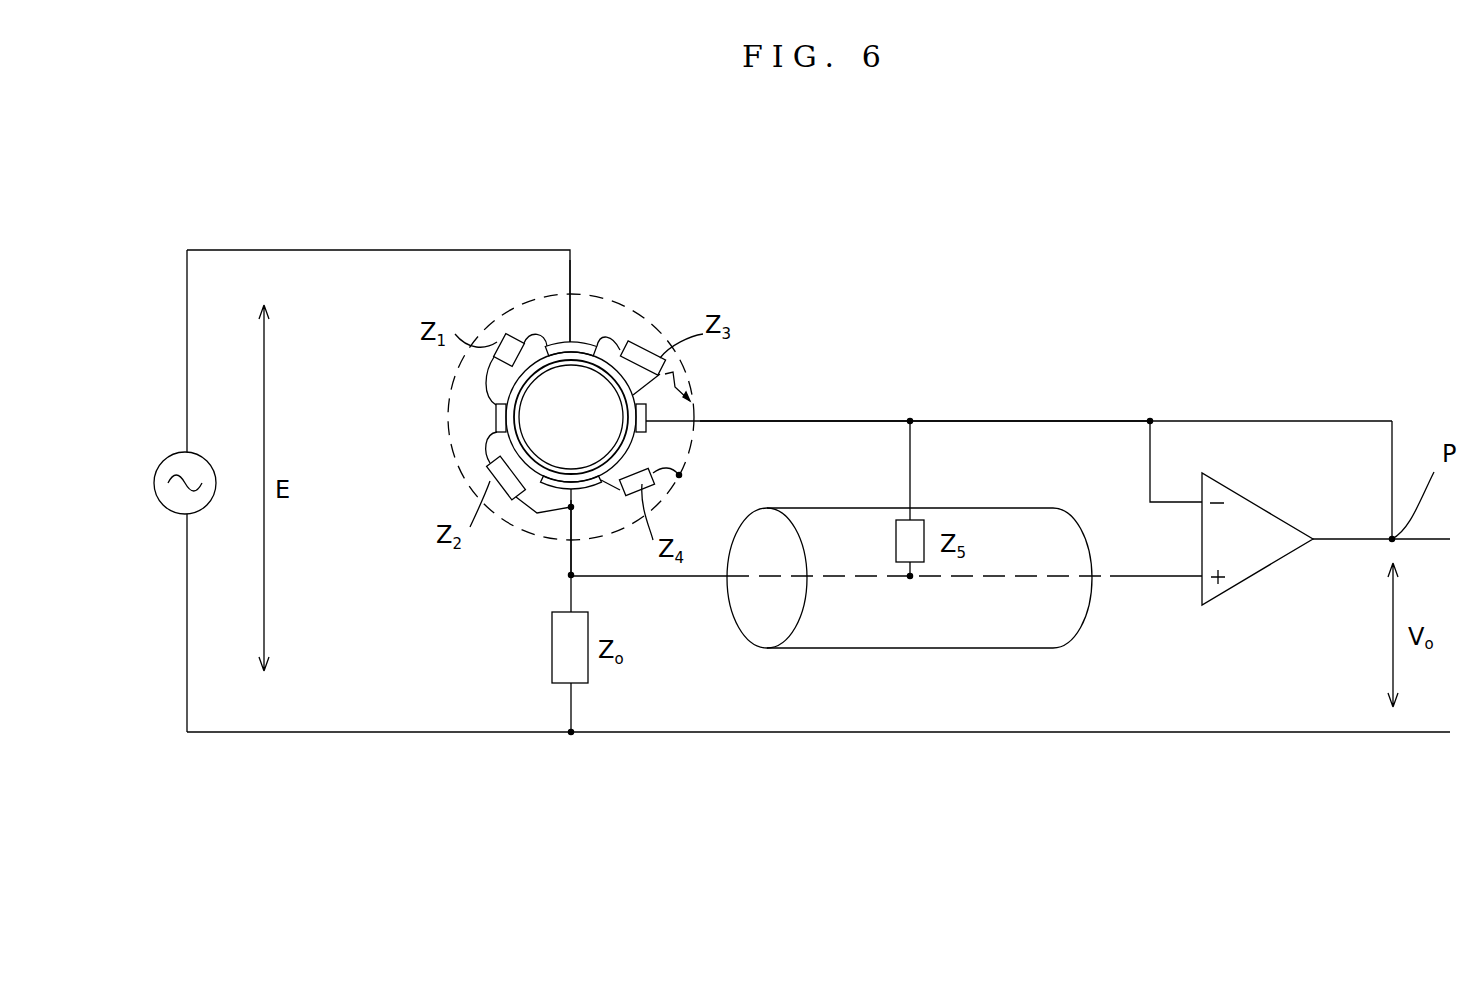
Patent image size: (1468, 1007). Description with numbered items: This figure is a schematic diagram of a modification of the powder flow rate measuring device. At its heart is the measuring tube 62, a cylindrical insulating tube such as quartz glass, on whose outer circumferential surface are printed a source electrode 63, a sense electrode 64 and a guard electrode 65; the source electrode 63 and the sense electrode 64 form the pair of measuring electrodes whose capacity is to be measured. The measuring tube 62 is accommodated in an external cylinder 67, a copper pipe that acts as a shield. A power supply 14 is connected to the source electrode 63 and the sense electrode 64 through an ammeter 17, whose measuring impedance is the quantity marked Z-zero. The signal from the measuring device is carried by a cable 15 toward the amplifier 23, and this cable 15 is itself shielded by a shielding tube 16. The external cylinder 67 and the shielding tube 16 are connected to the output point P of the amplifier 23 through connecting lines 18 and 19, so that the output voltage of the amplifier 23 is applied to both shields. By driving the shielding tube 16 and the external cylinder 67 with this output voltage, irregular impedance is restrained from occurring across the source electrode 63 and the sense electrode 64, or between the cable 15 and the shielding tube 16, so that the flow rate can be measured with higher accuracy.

The power supply 14 is at (156, 494).
The cable 15 is at (687, 576).
The shielding tube 16 is at (1010, 527).
The ammeter 17 is at (552, 652).
The connecting line 18 is at (815, 420).
The connecting line 19 is at (910, 462).
The amplifier 23 is at (1267, 547).
The measuring tube 62 is at (686, 375).
The source electrode 63 is at (582, 342).
The sense electrode 64 is at (571, 507).
The guard electrode 65 is at (495, 413).
The external cylinder 67 is at (640, 312).